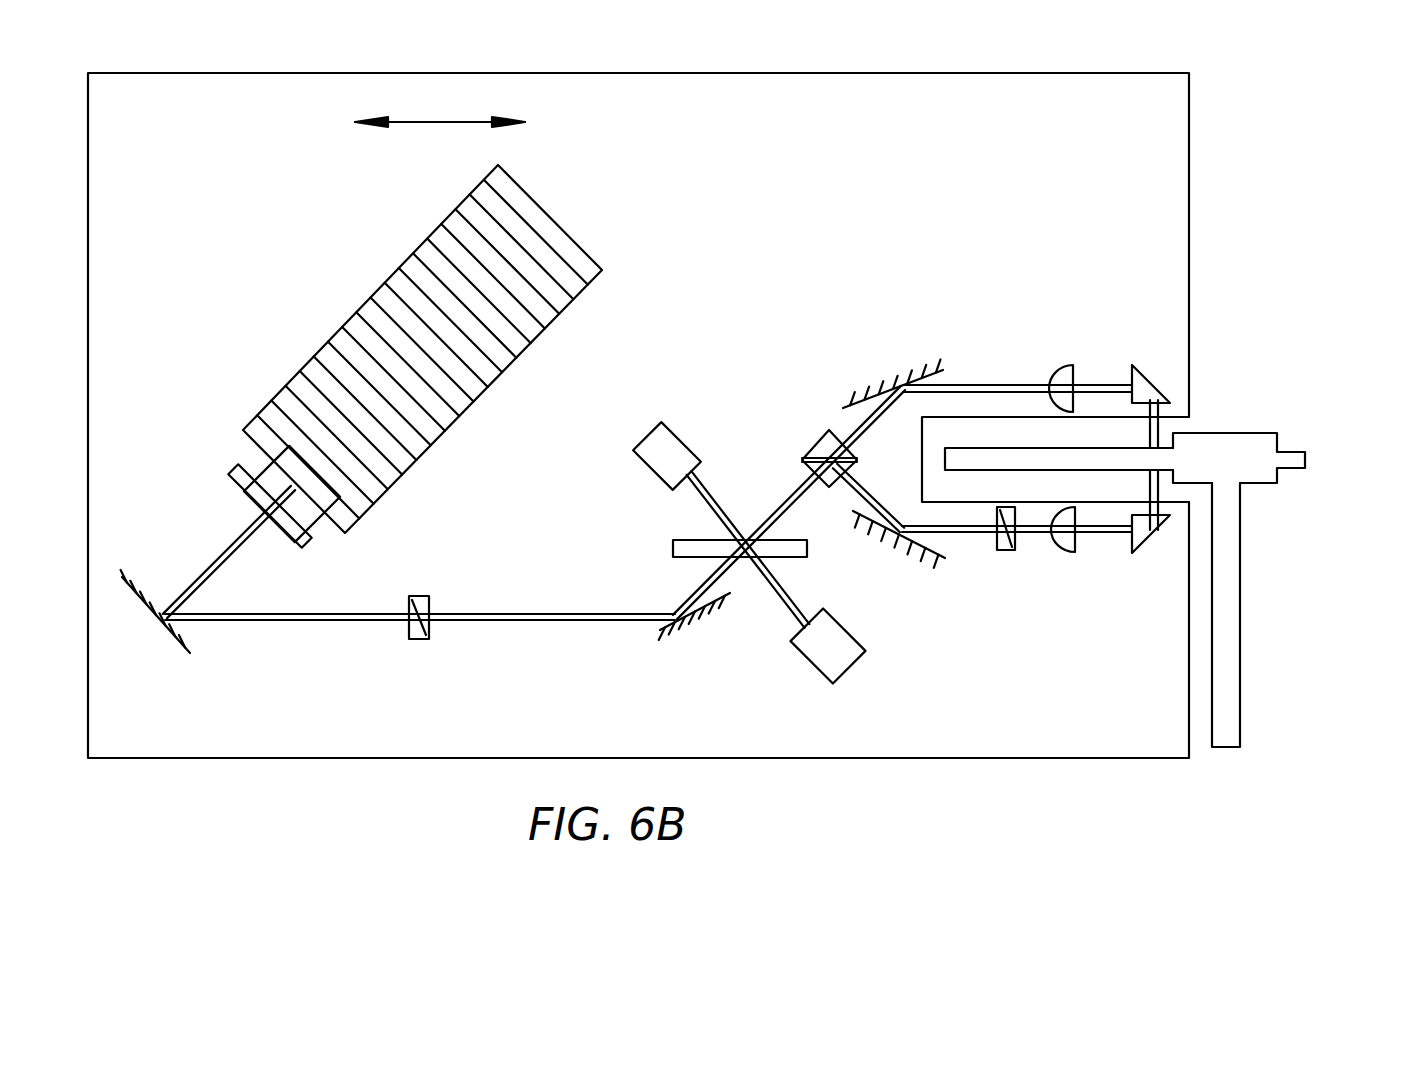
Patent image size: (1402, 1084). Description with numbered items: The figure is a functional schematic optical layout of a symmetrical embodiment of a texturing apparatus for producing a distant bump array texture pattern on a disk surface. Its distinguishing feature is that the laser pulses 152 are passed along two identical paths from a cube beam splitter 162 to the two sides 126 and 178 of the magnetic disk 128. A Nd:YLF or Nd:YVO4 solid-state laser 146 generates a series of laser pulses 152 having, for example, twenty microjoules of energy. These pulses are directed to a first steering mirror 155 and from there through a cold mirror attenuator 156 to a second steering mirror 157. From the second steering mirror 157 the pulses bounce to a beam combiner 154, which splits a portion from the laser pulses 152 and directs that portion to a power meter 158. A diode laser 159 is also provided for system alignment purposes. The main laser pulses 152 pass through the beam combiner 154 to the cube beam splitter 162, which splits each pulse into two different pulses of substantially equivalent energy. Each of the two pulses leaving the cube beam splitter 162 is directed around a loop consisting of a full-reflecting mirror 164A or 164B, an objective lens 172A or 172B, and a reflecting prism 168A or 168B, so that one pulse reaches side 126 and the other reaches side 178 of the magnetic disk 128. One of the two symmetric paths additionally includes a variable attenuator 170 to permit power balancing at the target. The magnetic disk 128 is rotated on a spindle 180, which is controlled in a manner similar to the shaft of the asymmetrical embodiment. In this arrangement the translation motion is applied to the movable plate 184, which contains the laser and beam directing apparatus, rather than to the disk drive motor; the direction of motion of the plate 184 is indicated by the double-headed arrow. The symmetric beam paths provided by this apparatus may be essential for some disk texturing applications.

The movable plate 184 is at (1190, 141).
The solid-state laser 146 is at (286, 384).
The laser pulses 152 is at (235, 540).
The first steering mirror 155 is at (183, 656).
The cold mirror attenuator 156 is at (412, 595).
The second steering mirror 157 is at (633, 638).
The diode laser 159 is at (673, 428).
The beam combiner 154 is at (807, 546).
The power meter 158 is at (807, 665).
The cube beam splitter 162 is at (812, 446).
The full-reflecting mirror 164A is at (893, 378).
The full-reflecting mirror 164B is at (912, 552).
The side of the magnetic disk 126 is at (988, 447).
The side of the magnetic disk 178 is at (963, 473).
The variable attenuator 170 is at (1010, 552).
The objective lens 172A is at (1062, 366).
The objective lens 172B is at (1077, 544).
The reflecting prism 168A is at (1149, 364).
The reflecting prism 168B is at (1153, 540).
The magnetic disk 128 is at (1307, 458).
The spindle 180 is at (1242, 562).